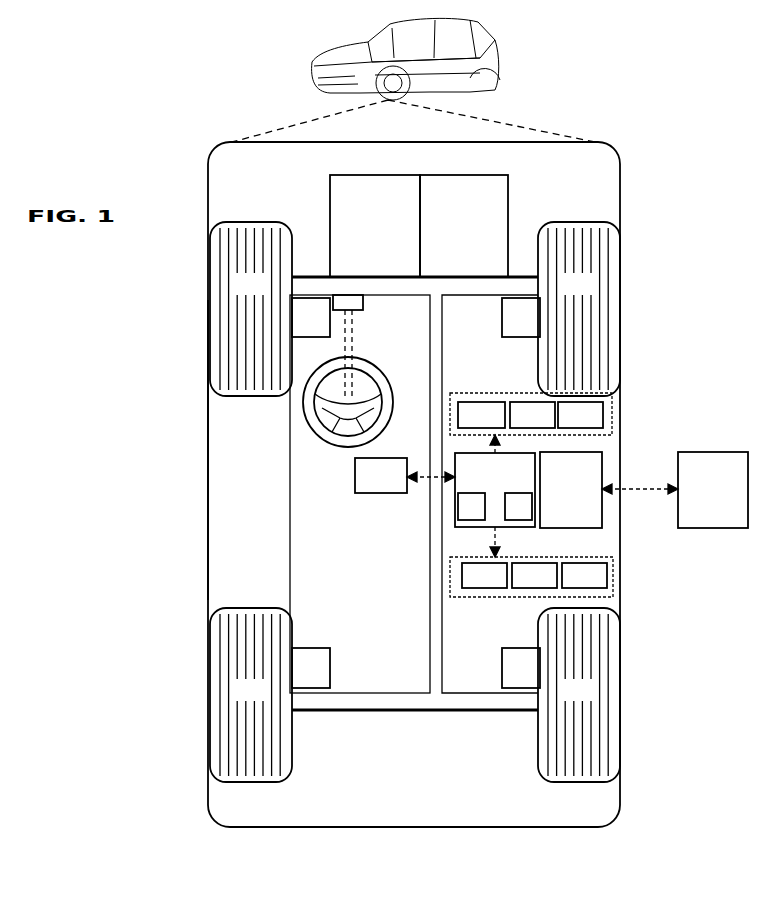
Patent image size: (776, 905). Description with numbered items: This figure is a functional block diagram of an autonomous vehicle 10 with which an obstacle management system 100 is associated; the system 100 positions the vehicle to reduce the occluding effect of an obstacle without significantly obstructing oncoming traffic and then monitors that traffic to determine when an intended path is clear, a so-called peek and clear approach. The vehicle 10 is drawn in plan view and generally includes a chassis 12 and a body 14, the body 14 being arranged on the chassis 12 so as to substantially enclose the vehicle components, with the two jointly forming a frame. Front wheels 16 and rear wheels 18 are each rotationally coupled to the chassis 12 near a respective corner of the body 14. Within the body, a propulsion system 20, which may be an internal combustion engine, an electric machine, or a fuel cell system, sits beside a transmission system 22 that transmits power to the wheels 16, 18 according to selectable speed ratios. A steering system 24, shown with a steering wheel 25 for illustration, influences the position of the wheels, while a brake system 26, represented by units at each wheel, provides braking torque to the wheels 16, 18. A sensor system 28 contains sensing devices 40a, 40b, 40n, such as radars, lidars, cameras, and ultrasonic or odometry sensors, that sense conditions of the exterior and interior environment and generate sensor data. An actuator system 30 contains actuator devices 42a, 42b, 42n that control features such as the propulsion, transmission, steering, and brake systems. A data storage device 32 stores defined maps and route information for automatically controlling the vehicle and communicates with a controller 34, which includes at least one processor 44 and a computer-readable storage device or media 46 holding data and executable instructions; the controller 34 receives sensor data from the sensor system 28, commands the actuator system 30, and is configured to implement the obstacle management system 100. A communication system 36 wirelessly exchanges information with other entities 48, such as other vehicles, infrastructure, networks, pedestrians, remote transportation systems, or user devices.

The vehicle 10 is at (302, 62).
The obstacle management system 100 is at (638, 342).
The chassis 12 is at (437, 712).
The body 14 is at (208, 456).
The front wheels 16 is at (415, 309).
The rear wheels 18 is at (415, 695).
The propulsion system 20 is at (375, 226).
The transmission system 22 is at (464, 226).
The steering system 24 is at (332, 384).
The steering wheel 25 is at (380, 365).
The brake system 26 is at (416, 493).
The sensor system 28 is at (531, 396).
The actuator system 30 is at (531, 598).
The data storage device 32 is at (381, 475).
The controller 34 is at (495, 490).
The communication system 36 is at (571, 490).
The sensing device 40a is at (481, 415).
The sensing device 40b is at (532, 415).
The sensing device 40n is at (580, 415).
The actuator device 42a is at (484, 575).
The actuator device 42b is at (534, 575).
The actuator device 42n is at (584, 575).
The processor 44 is at (471, 506).
The computer-readable storage device or media 46 is at (518, 506).
The other entities 48 is at (713, 490).